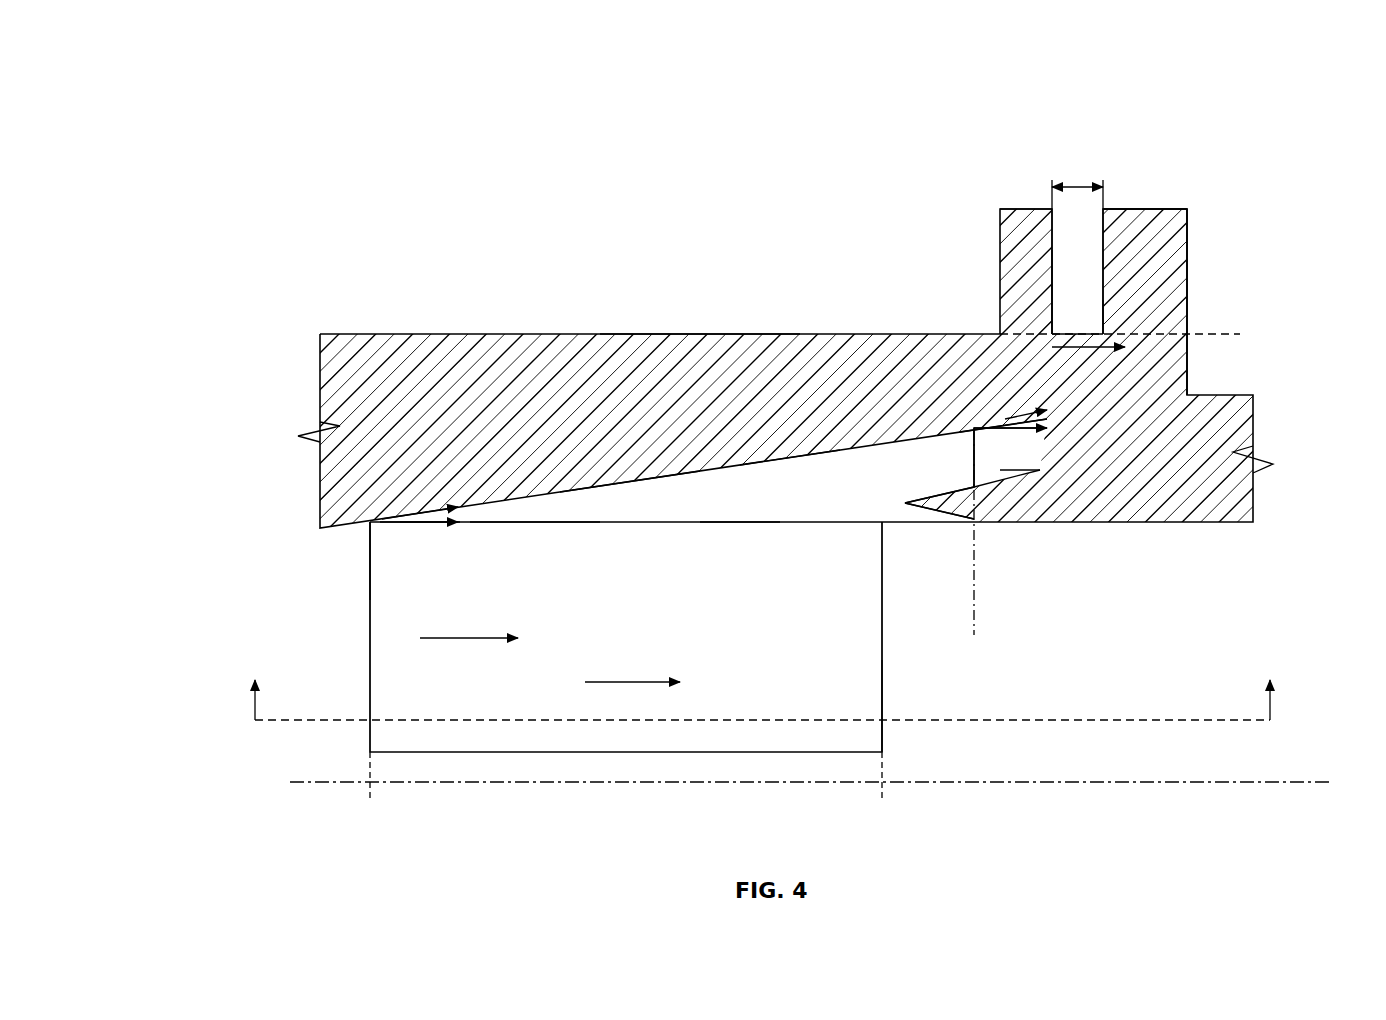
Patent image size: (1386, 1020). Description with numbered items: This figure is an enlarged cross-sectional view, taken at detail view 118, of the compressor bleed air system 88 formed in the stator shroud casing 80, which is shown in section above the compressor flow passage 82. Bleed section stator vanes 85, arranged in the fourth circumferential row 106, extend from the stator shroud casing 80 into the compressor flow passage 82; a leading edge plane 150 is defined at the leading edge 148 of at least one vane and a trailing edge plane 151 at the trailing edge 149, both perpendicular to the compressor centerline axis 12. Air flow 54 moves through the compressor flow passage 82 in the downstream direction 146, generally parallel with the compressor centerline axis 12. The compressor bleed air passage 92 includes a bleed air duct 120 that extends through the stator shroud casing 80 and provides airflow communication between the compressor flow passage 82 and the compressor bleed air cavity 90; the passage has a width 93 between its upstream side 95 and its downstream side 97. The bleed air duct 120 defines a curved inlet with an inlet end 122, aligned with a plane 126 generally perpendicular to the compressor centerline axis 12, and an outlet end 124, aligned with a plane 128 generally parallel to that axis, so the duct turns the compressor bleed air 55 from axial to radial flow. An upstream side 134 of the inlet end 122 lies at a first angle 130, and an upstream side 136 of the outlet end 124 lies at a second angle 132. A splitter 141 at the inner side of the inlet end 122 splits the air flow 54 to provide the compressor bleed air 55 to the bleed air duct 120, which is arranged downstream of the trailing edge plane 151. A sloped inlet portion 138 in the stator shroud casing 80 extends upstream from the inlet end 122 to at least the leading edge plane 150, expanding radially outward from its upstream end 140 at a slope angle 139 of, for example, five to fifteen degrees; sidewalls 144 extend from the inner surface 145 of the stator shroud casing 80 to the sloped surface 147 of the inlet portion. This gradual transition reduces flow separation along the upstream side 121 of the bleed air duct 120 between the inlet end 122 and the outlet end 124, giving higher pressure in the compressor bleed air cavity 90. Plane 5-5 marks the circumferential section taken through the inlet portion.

The stator shroud casing 80 is at (388, 345).
The detail view 118 is at (709, 224).
The compressor bleed air system 88 is at (1012, 50).
The compressor bleed air passage 92 is at (1068, 233).
The width 93 is at (1075, 186).
The downstream side 97 is at (1112, 245).
The compressor bleed air cavity 90 is at (1152, 151).
The outlet end 124 is at (1182, 208).
The upstream side 95 is at (1050, 280).
The upstream side 121 is at (993, 414).
The upstream side 136 is at (1050, 347).
The second angle 132 is at (1098, 322).
The plane 128 is at (1205, 334).
The first angle 130 is at (997, 455).
The inlet end 122 is at (968, 449).
The upstream side 134 is at (985, 442).
The compressor bleed air 55 is at (1032, 463).
The bleed air duct 120 is at (1073, 250).
The plane 126 is at (980, 632).
The splitter 141 is at (900, 503).
The sloped surface 147 is at (792, 462).
The sidewalls 144 is at (736, 503).
The sloped inlet portion 138 is at (621, 508).
The inner surface 145 is at (530, 526).
The upstream end 140 is at (376, 526).
The slope angle 139 is at (428, 522).
The leading edge 148 is at (370, 555).
The fourth circumferential row 106 is at (388, 607).
The compressor flow passage 82 is at (722, 639).
The air flow 54 is at (470, 640).
The downstream direction 146 is at (630, 680).
The bleed section stator vanes 85 is at (882, 650).
The trailing edge 149 is at (886, 688).
The plane 5- 5 is at (763, 684).
The leading edge plane 150 is at (368, 790).
The trailing edge plane 151 is at (885, 790).
The compressor centerline axis 12 is at (1152, 784).